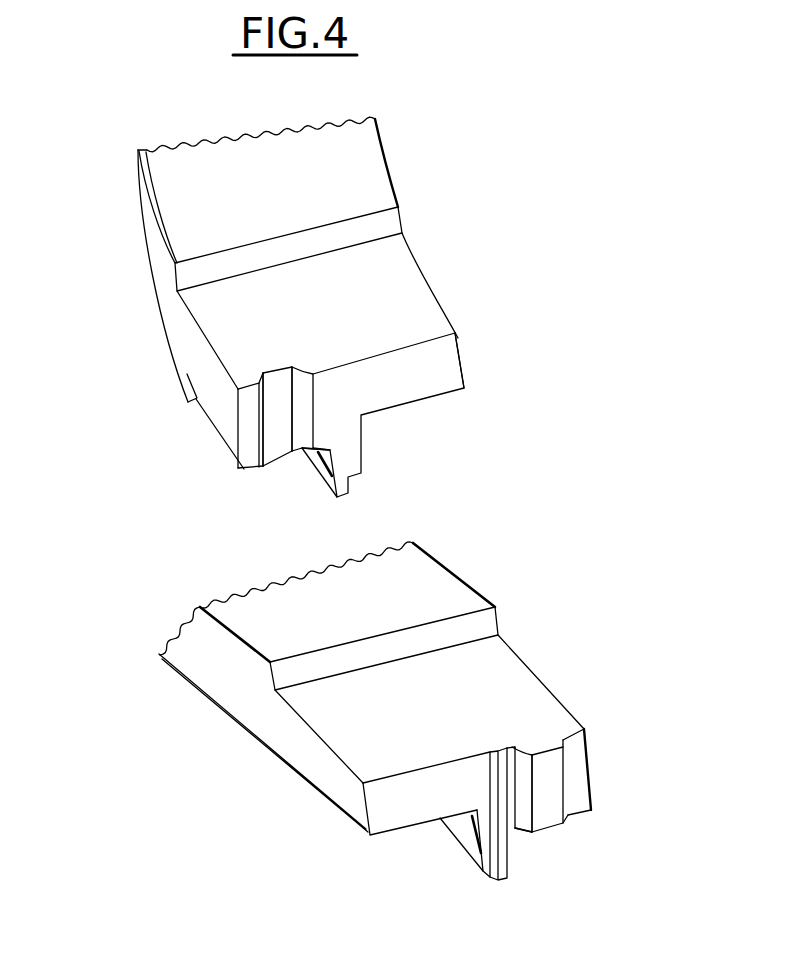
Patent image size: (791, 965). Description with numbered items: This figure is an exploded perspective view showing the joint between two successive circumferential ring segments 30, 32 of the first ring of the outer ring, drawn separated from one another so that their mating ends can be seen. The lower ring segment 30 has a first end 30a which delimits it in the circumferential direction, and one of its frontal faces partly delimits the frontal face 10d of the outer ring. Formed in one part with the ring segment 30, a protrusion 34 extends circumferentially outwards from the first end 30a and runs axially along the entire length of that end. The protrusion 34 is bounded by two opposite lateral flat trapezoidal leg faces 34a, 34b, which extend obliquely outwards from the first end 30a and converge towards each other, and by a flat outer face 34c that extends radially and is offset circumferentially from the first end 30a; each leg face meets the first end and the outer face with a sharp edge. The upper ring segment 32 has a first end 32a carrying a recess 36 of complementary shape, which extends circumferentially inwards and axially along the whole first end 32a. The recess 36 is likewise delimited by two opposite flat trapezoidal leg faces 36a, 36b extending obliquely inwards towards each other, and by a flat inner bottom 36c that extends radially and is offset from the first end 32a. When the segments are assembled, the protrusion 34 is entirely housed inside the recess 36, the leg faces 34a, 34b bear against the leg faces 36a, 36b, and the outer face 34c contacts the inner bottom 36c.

The ring segment 32 is at (371, 165).
The first end 32a is at (455, 367).
The recess 36 is at (281, 444).
The flat trapezoidal leg face 36a is at (308, 436).
The flat trapezoidal leg face 36b is at (271, 435).
The inner bottom 36c is at (282, 392).
The ring segment 30 is at (527, 677).
The first end 30a is at (387, 817).
The frontal face 10d is at (372, 742).
The protrusion 34 is at (562, 785).
The flat trapezoidal leg face 34a is at (565, 763).
The flat trapezoidal leg face 34b is at (528, 818).
The outer face 34c is at (553, 810).